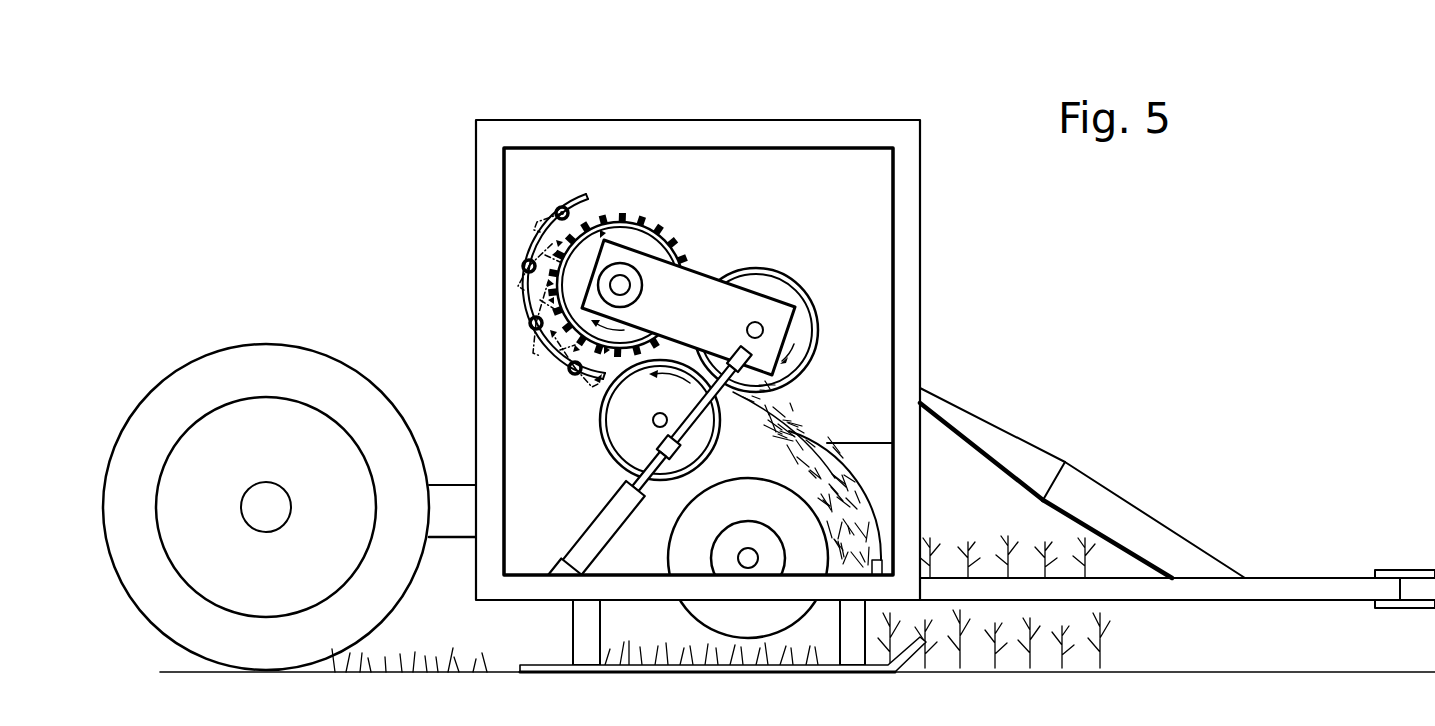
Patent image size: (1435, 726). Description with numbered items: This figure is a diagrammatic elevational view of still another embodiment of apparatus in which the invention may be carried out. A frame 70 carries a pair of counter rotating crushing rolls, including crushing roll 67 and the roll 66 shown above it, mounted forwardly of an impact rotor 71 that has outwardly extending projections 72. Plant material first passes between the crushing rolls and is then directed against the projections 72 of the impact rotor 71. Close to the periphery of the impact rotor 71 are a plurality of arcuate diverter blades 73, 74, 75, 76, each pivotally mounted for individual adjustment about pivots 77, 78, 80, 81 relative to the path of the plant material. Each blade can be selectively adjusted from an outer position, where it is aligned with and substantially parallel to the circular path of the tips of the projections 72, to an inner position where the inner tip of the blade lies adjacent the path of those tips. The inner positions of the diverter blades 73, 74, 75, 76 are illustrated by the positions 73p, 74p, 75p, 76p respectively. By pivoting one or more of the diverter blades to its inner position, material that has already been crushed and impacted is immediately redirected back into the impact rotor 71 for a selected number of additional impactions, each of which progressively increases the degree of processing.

The frame 70 is at (657, 128).
The impact rotor 71 is at (671, 270).
The outwardly extending projections 72 is at (634, 216).
The arcuate diverter blade 73 is at (557, 350).
The inner position of diverter blade 73p is at (590, 393).
The arcuate diverter blade 74 is at (530, 300).
The inner position of diverter blade 74p is at (537, 348).
The arcuate diverter blade 75 is at (540, 254).
The inner position of diverter blade 75p is at (522, 284).
The arcuate diverter blade 76 is at (572, 200).
The inner position of diverter blade 76p is at (540, 212).
The pivot 77 is at (575, 374).
The pivot 78 is at (530, 325).
The pivot 80 is at (525, 264).
The pivot 81 is at (560, 210).
The upper roller 66 is at (792, 274).
The first crushing roll 67 is at (614, 462).